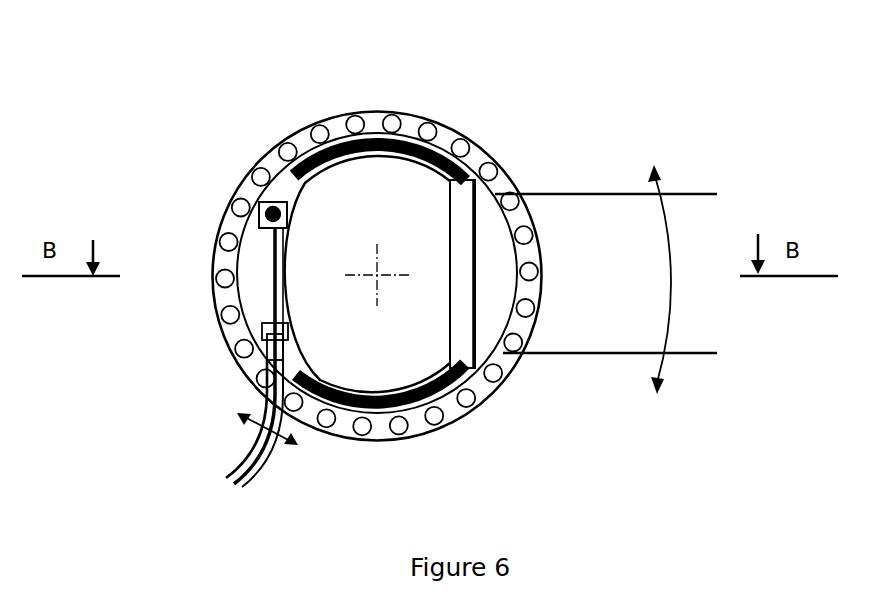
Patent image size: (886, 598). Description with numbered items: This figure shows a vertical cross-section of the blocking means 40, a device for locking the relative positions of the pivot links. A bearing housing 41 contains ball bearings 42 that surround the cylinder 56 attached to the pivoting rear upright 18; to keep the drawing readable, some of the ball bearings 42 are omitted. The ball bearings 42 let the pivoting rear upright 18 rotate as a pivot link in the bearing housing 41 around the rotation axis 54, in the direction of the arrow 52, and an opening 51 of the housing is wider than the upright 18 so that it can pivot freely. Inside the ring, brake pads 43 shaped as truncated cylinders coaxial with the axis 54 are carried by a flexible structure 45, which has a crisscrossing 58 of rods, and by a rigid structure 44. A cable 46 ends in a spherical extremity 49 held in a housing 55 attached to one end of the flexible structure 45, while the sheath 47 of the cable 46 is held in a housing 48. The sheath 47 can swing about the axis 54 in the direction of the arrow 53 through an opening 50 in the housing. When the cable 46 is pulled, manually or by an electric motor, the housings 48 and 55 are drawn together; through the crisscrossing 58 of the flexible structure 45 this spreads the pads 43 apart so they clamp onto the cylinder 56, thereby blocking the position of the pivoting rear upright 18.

The blocking means 40 is at (287, 84).
The bearing housing 41 is at (451, 122).
The ball bearings 42 is at (391, 113).
The brake pads 43 is at (484, 166).
The rigid structure 44 is at (462, 220).
The flexible structure 45 is at (292, 172).
The cable 46 is at (223, 482).
The sheath 47 is at (270, 455).
The housing 48 is at (262, 334).
The spherical extremity 49 is at (259, 220).
The opening 50 is at (267, 355).
The opening 51 is at (500, 363).
The arrow 52 is at (662, 363).
The arrow 53 is at (247, 423).
The rotation axis 54 is at (379, 292).
The housing 55 is at (262, 202).
The cylinder 56 is at (527, 284).
The crisscrossing of rods 58 is at (273, 286).
The pivoting rear upright 18 is at (687, 207).